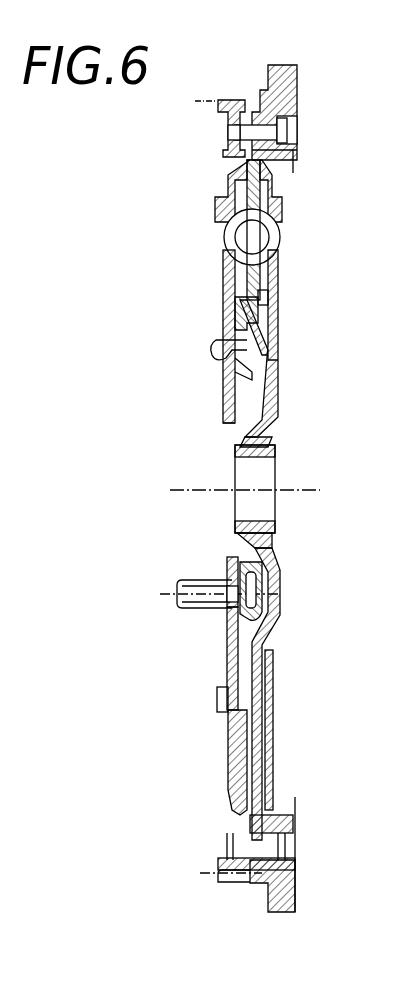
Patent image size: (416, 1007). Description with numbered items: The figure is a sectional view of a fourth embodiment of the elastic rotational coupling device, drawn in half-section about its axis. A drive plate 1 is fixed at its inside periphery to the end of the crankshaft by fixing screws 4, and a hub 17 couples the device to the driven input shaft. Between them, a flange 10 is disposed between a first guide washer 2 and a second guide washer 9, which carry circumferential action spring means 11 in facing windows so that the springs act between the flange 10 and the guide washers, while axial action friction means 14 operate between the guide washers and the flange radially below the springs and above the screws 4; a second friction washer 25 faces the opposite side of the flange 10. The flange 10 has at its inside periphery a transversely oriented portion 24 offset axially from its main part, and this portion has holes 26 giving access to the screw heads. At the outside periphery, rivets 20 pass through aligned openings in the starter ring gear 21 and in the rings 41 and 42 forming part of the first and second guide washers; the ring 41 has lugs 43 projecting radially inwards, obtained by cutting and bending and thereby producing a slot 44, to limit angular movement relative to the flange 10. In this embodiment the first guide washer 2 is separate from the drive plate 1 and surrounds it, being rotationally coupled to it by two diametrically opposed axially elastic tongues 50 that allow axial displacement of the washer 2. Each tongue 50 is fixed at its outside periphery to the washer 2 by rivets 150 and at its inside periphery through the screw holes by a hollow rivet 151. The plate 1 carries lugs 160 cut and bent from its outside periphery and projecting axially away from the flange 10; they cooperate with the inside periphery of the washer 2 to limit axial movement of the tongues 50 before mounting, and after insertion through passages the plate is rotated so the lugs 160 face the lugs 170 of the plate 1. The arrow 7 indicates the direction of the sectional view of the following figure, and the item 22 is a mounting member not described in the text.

The drive plate 1 is at (223, 413).
The first guide washer 2 is at (224, 270).
The fixing screws 4 is at (195, 592).
The axial force arrow 7 is at (278, 738).
The second guide washer 9 is at (272, 188).
The flange 10 is at (284, 628).
The circumferential action spring means 11 is at (282, 237).
The axial action friction means 14 is at (265, 348).
The hub 17 is at (274, 535).
The rivets 20 is at (288, 132).
The starter ring gear 21 is at (215, 114).
The mounting block 22 is at (296, 90).
The transversely oriented portion 24 is at (281, 568).
The second friction washer 25 is at (233, 313).
The holes 26 is at (258, 590).
The ring of the first guide washer 41 is at (250, 872).
The ring of the second guide washer 42 is at (296, 882).
The lugs 43 is at (252, 818).
The slot 44 is at (230, 805).
The axially elastic tongues 50 is at (228, 648).
The rivets 150 is at (217, 700).
The hollow rivet 151 is at (232, 610).
The lugs of the plate 160 is at (211, 350).
The lugs of the plate 170 is at (224, 373).